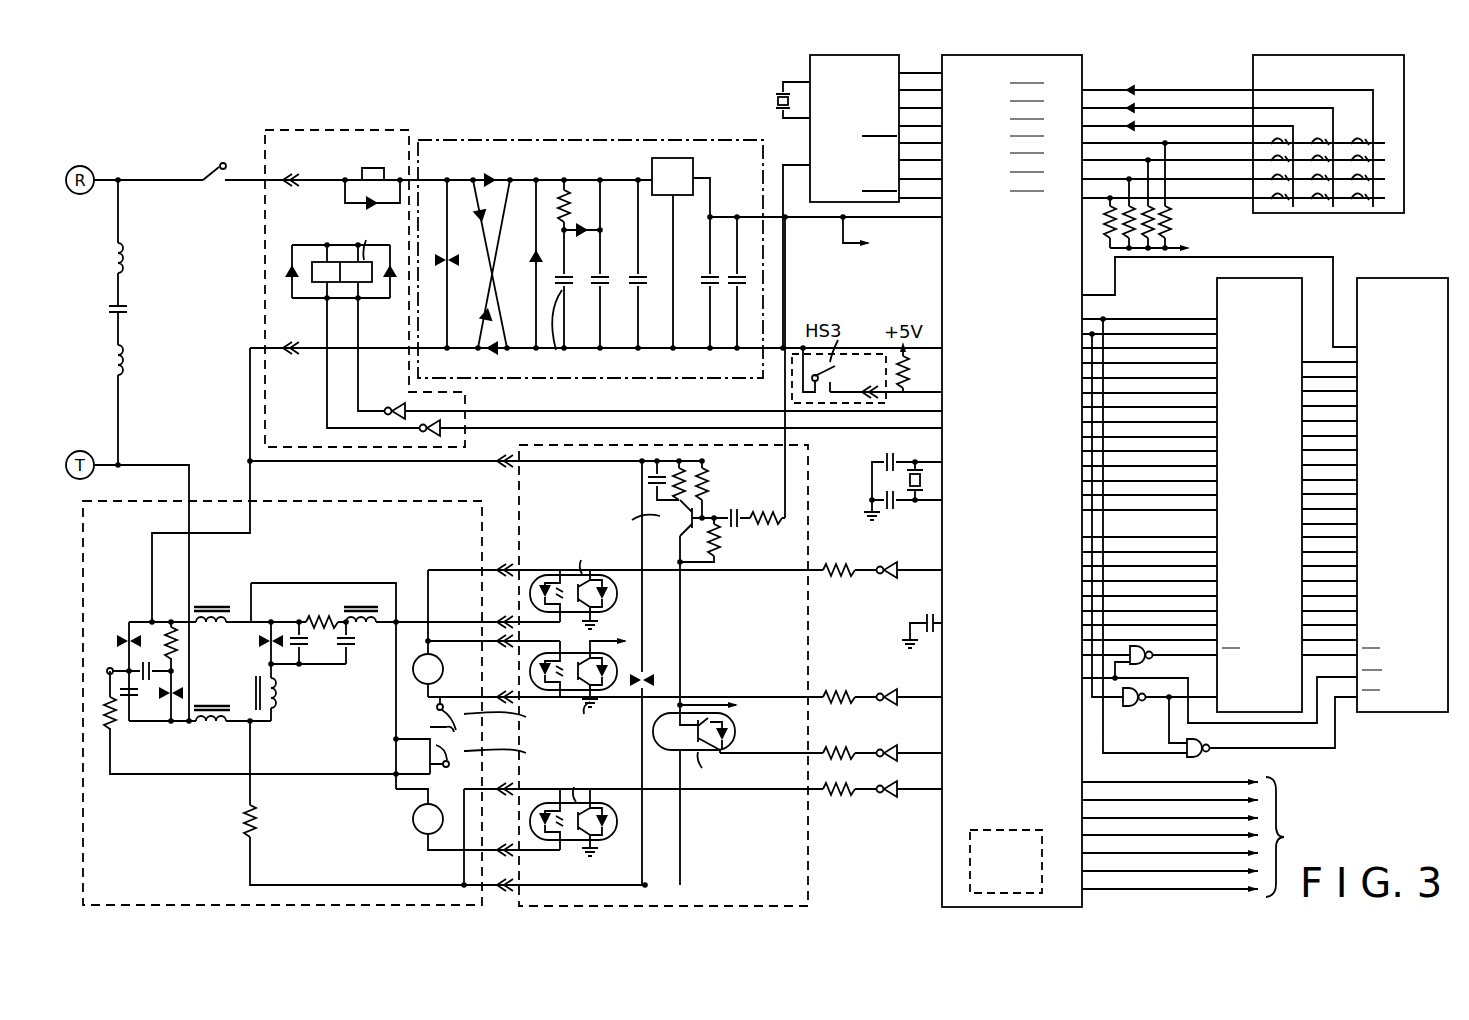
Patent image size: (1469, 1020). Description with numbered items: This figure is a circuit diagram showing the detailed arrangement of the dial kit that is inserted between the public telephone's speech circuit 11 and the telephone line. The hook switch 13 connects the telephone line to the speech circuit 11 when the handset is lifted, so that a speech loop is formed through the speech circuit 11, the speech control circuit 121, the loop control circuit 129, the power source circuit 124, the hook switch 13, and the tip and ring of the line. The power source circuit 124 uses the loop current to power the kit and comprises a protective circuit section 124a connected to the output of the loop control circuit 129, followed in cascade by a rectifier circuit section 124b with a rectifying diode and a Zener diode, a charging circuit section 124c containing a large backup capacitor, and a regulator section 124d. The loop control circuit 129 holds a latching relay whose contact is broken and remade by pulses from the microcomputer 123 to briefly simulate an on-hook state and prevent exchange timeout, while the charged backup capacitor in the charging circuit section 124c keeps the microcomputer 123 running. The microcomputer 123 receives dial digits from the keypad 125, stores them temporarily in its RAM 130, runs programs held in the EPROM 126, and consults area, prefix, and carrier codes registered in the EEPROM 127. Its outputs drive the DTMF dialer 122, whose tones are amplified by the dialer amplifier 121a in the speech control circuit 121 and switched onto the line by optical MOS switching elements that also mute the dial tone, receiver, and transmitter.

The speech circuit 11 is at (382, 502).
The hook switch 13 is at (204, 164).
The speech control circuit 121 is at (686, 675).
The dialer amplifier 121a is at (704, 473).
The DTMF dialer 122 is at (810, 64).
The microcomputer 123 is at (892, 468).
The power source circuit 124 is at (680, 301).
The protective circuit section 124a is at (447, 178).
The rectifier circuit section 124b is at (492, 176).
The charging circuit section 124c is at (582, 195).
The regulator section 124d is at (672, 158).
The keypad 125 is at (1253, 80).
The EPROM 126 is at (1217, 290).
The EEPROM 127 is at (1352, 285).
The loop control circuit 129 is at (318, 130).
The RAM 130 is at (970, 877).